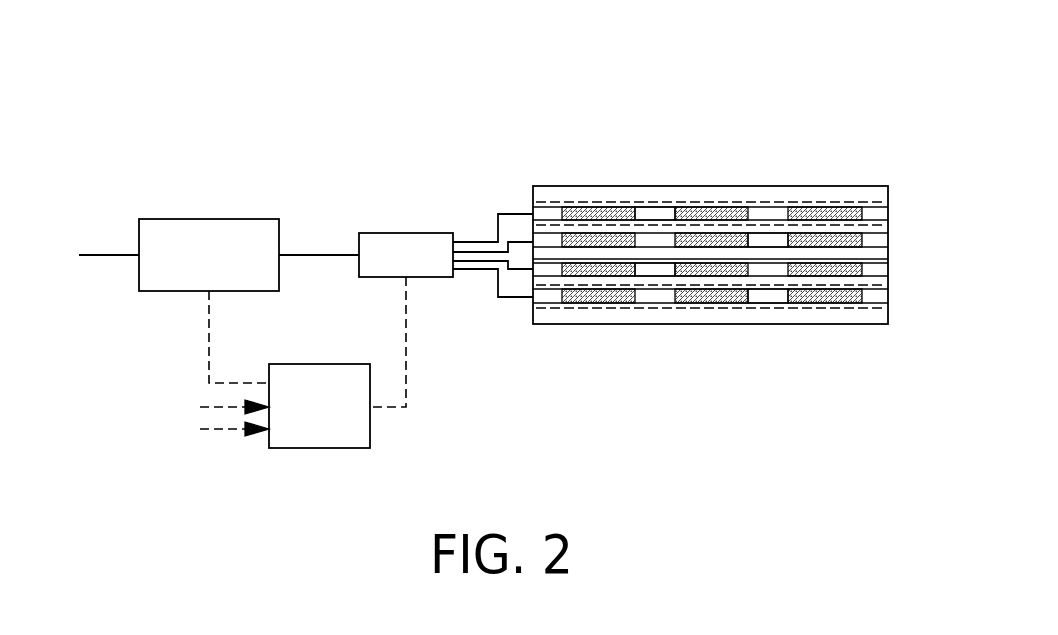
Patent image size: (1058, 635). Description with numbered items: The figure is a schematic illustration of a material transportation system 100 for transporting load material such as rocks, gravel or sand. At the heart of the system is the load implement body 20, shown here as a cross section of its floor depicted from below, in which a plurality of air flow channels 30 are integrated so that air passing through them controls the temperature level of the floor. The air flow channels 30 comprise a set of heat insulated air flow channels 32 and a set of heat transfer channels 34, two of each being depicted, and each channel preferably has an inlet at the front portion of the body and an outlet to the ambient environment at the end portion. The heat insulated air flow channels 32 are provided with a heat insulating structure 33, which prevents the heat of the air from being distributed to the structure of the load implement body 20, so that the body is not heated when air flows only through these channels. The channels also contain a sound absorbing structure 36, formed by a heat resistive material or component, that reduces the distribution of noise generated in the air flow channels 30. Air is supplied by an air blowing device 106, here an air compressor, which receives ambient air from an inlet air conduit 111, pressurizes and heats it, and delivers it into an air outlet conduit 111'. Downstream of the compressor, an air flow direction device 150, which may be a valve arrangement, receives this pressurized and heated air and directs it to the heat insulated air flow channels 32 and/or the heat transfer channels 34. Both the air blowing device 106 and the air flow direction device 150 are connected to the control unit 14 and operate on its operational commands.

The material transportation system 100 is at (290, 110).
The inlet air conduit 111 is at (91, 201).
The air blowing device 106 is at (207, 219).
The air outlet conduit 111' is at (301, 201).
The air flow direction device 150 is at (405, 225).
The control unit 14 is at (320, 448).
The load implement body 20 is at (720, 186).
The heat insulating structure 33 is at (556, 203).
The air flow channels 30 is at (878, 206).
The sound absorbing structure 36 is at (606, 233).
The heat insulated air flow channels 32 is at (658, 213).
The heat transfer channels 34 is at (768, 233).